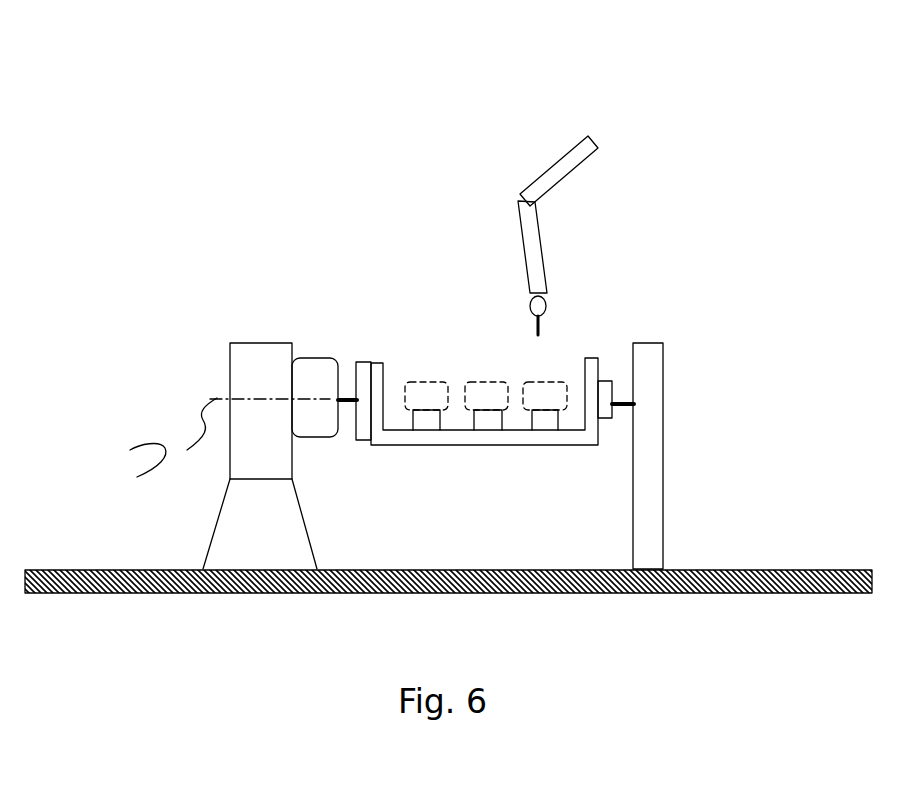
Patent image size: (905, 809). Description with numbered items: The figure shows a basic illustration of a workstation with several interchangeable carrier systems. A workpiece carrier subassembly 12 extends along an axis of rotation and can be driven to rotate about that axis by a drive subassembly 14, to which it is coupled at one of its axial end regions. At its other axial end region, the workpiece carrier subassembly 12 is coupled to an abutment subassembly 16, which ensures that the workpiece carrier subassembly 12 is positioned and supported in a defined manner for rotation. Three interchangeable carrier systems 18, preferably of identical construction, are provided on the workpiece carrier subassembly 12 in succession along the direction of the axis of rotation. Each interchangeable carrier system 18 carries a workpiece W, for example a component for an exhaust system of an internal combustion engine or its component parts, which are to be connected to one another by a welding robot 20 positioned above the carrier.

The workpiece carrier subassembly 12 is at (585, 445).
The drive subassembly 14 is at (263, 342).
The abutment subassembly 16 is at (663, 370).
The interchangeable carrier system 18 is at (432, 422).
The welding robot 20 is at (548, 168).
The workpiece W is at (417, 383).